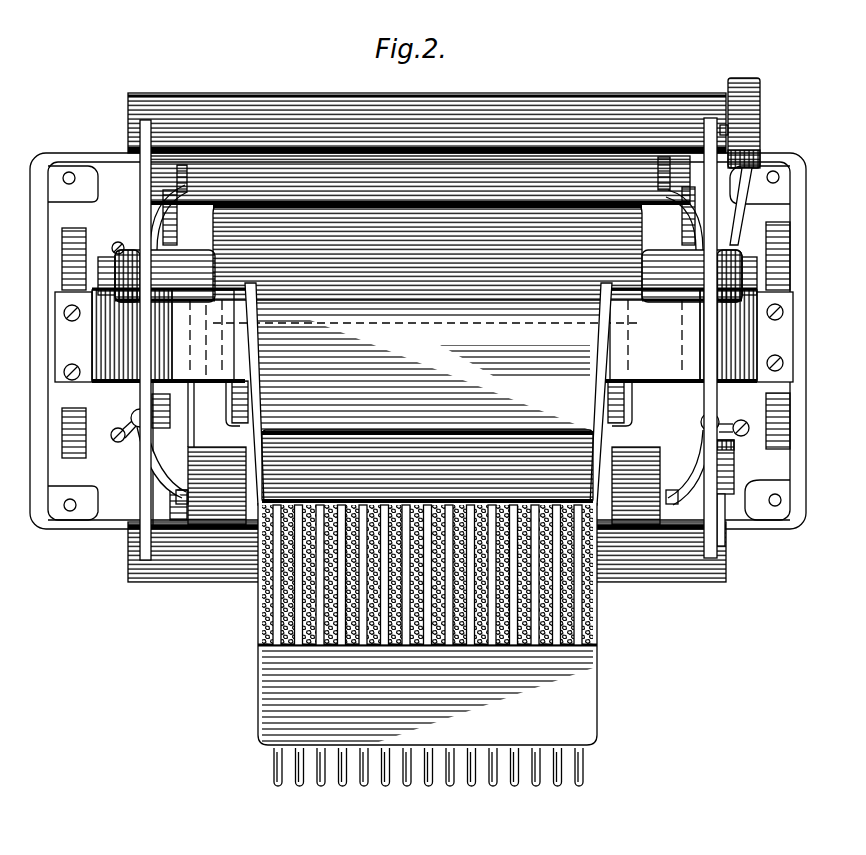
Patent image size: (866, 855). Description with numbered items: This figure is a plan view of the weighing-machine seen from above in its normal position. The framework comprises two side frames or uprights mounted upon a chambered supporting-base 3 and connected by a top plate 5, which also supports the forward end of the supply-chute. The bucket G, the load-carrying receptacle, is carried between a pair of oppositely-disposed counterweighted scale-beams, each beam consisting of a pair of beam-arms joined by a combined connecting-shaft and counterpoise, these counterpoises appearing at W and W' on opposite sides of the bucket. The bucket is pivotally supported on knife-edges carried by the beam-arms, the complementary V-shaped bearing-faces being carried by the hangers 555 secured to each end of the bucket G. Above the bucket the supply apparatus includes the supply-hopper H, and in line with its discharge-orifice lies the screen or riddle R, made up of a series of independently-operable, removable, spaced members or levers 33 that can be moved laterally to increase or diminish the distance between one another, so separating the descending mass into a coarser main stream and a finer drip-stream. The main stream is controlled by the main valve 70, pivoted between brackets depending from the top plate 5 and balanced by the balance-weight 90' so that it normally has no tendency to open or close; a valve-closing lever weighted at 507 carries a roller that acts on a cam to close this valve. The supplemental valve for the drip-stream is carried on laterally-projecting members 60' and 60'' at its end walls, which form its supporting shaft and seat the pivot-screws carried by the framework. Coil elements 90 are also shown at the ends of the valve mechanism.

The chambered supporting-base 3 is at (803, 268).
The counterpoise W is at (427, 123).
The bucket G is at (420, 180).
The main valve 70 is at (427, 316).
The left coil 90 is at (156, 272).
The balance-weight 90' is at (699, 276).
The top plate 5 is at (699, 335).
The laterally-projecting member 60' is at (222, 409).
The laterally-projecting member 60'' is at (635, 403).
The hanger 555 is at (142, 447).
The weight 507 is at (709, 452).
The counterpoise W' is at (427, 552).
The screen member 33 is at (292, 606).
The supply-hopper H is at (442, 624).
The screen or riddle R is at (442, 767).